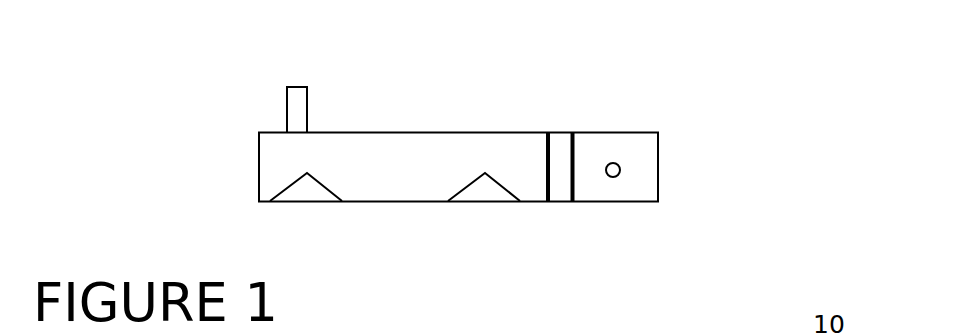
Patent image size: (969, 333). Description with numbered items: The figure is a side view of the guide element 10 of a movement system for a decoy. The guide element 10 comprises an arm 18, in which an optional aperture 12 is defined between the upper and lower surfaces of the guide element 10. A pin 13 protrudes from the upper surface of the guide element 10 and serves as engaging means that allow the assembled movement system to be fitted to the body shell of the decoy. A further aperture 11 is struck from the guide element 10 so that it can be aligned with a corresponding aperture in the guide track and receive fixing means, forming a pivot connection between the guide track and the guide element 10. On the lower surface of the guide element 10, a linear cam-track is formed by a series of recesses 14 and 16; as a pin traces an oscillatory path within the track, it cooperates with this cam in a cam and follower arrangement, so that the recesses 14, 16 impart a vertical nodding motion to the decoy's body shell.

The guide element 10 is at (696, 82).
The aperture 11 is at (620, 171).
The aperture 12 is at (560, 132).
The pin 13 is at (294, 106).
The recess 14 is at (308, 200).
The recess 16 is at (483, 200).
The arm 18 is at (414, 174).